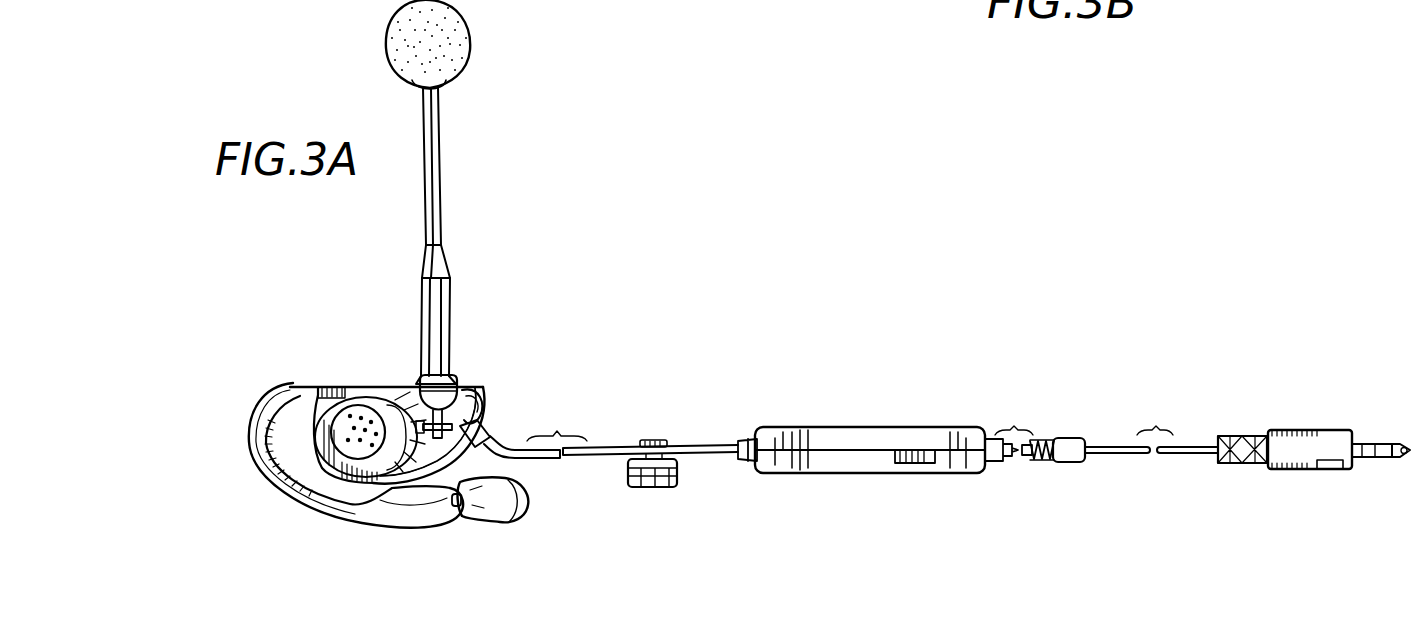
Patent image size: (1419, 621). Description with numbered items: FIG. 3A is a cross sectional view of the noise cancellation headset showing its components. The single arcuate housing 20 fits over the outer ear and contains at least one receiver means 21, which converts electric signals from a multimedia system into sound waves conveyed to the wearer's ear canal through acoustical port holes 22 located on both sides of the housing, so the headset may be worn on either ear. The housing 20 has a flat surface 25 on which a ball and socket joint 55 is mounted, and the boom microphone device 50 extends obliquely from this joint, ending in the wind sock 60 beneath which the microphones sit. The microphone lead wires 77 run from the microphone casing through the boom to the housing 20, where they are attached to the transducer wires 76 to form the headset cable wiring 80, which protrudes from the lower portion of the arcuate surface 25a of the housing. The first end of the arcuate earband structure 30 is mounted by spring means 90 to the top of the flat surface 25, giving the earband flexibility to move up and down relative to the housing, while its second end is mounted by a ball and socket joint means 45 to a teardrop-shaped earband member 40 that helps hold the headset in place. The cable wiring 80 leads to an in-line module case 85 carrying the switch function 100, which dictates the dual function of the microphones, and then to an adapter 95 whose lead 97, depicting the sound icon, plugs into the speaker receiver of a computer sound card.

The arcuate housing 20 is at (365, 386).
The receiver means 21 is at (346, 386).
The acoustical port holes 22 is at (247, 445).
The flat surface 25 is at (386, 386).
The arcuate surface 25a is at (485, 405).
The arcuate earband structure 30 is at (372, 523).
The earband member 40 is at (517, 515).
The ball and socket joint means 45 is at (460, 517).
The boom microphone device 50 is at (440, 215).
The ball and socket joint 55 is at (452, 385).
The wind sock 60 is at (470, 36).
The transducer wires 76 is at (493, 430).
The microphone lead wires 77 is at (470, 396).
The headset cable wiring 80 is at (595, 458).
The in-line module case 85 is at (870, 474).
The spring means 90 is at (326, 386).
The adapter 95 is at (1075, 438).
The lead 97 is at (1315, 468).
The switch function 100 is at (933, 448).